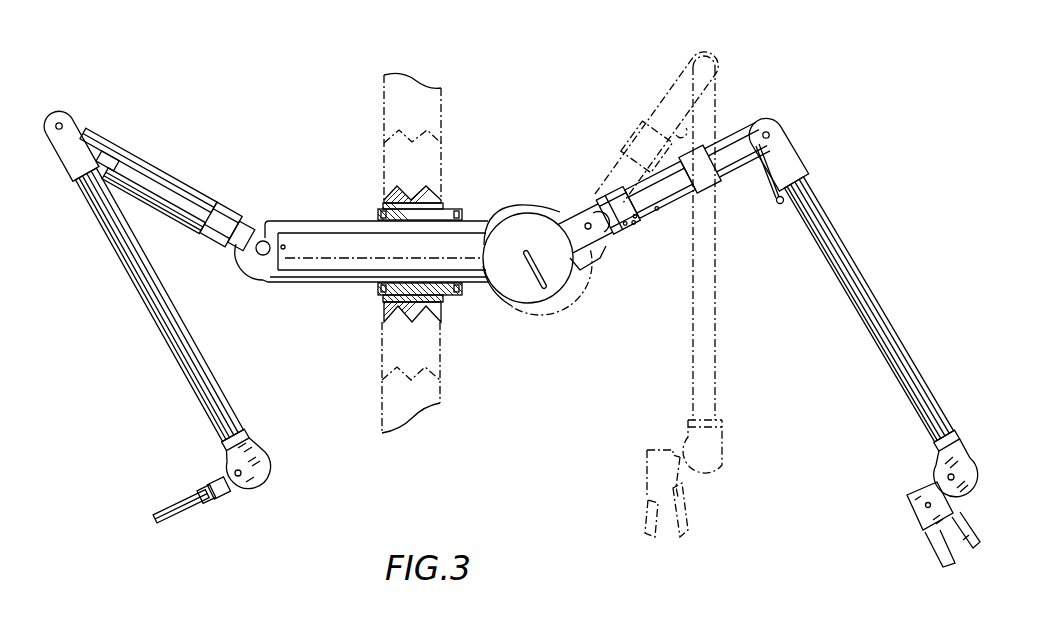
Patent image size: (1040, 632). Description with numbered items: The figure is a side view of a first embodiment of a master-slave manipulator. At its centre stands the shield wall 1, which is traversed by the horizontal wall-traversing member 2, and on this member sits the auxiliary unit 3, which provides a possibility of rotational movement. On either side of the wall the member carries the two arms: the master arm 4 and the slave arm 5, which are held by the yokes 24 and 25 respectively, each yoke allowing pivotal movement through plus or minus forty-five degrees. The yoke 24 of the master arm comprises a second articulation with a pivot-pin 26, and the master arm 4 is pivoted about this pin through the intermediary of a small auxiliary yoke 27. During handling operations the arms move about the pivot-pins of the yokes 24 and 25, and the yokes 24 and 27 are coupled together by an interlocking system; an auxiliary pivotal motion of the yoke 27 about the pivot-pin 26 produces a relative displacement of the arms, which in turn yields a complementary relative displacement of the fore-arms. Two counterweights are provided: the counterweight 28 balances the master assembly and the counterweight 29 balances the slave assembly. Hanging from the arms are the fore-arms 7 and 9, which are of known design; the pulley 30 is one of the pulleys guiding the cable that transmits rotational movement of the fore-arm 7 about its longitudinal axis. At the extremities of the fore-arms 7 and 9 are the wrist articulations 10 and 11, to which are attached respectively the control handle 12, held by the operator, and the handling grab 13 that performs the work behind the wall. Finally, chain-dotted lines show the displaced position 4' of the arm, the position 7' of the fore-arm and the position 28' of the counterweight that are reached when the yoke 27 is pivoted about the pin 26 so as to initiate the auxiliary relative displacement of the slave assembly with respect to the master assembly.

The shield wall 1 is at (432, 171).
The horizontal wall-traversing member 2 is at (318, 222).
The auxiliary unit 3 is at (447, 207).
The master arm 4 is at (664, 194).
The position of the arm 4' is at (656, 127).
The slave arm 5 is at (168, 183).
The fore-arm 7 is at (851, 280).
The position of the fore-arm 7' is at (697, 296).
The fore-arm 9 is at (177, 356).
The wrist articulation 10 is at (956, 477).
The wrist articulation 11 is at (241, 476).
The control handle 12 is at (952, 523).
The handling grab 13 is at (173, 518).
The yoke 24 is at (581, 267).
The yoke 25 is at (248, 267).
The pivot-pin 26 is at (586, 222).
The small auxiliary yoke 27 is at (610, 200).
The counterweight 28 is at (529, 238).
The position of the counterweight 28' is at (567, 286).
The counterweight 29 is at (515, 212).
The pulley 30 is at (779, 206).